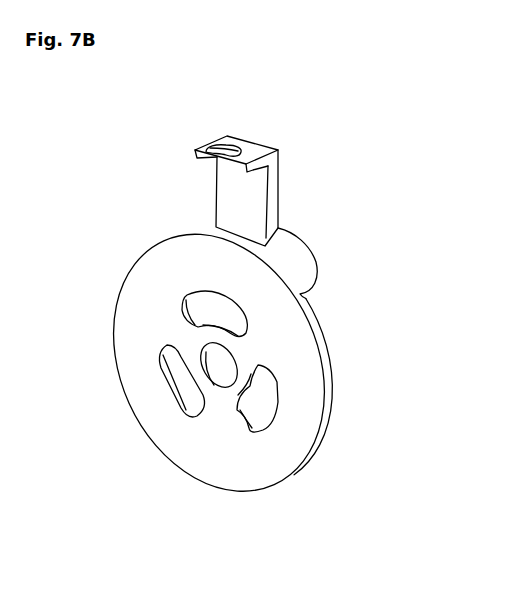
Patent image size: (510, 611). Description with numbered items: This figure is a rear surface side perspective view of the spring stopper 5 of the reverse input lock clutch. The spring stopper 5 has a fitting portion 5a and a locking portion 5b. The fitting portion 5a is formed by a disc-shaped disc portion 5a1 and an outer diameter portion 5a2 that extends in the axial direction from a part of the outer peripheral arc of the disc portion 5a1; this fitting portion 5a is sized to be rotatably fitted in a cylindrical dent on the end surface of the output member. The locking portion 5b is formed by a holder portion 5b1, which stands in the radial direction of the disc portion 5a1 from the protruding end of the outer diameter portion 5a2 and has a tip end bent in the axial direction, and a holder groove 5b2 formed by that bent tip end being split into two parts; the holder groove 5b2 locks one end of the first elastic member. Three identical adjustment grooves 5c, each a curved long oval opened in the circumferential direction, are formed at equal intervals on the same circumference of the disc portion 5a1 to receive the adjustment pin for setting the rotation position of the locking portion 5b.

The spring stopper 5 is at (330, 132).
The fitting portion 5a is at (127, 176).
The disc portion 5a1 is at (137, 294).
The outer diameter portion 5a2 is at (202, 231).
The locking portion 5b is at (166, 76).
The holder portion 5b1 is at (224, 183).
The holder groove 5b2 is at (225, 138).
The adjustment grooves 5c is at (167, 395).